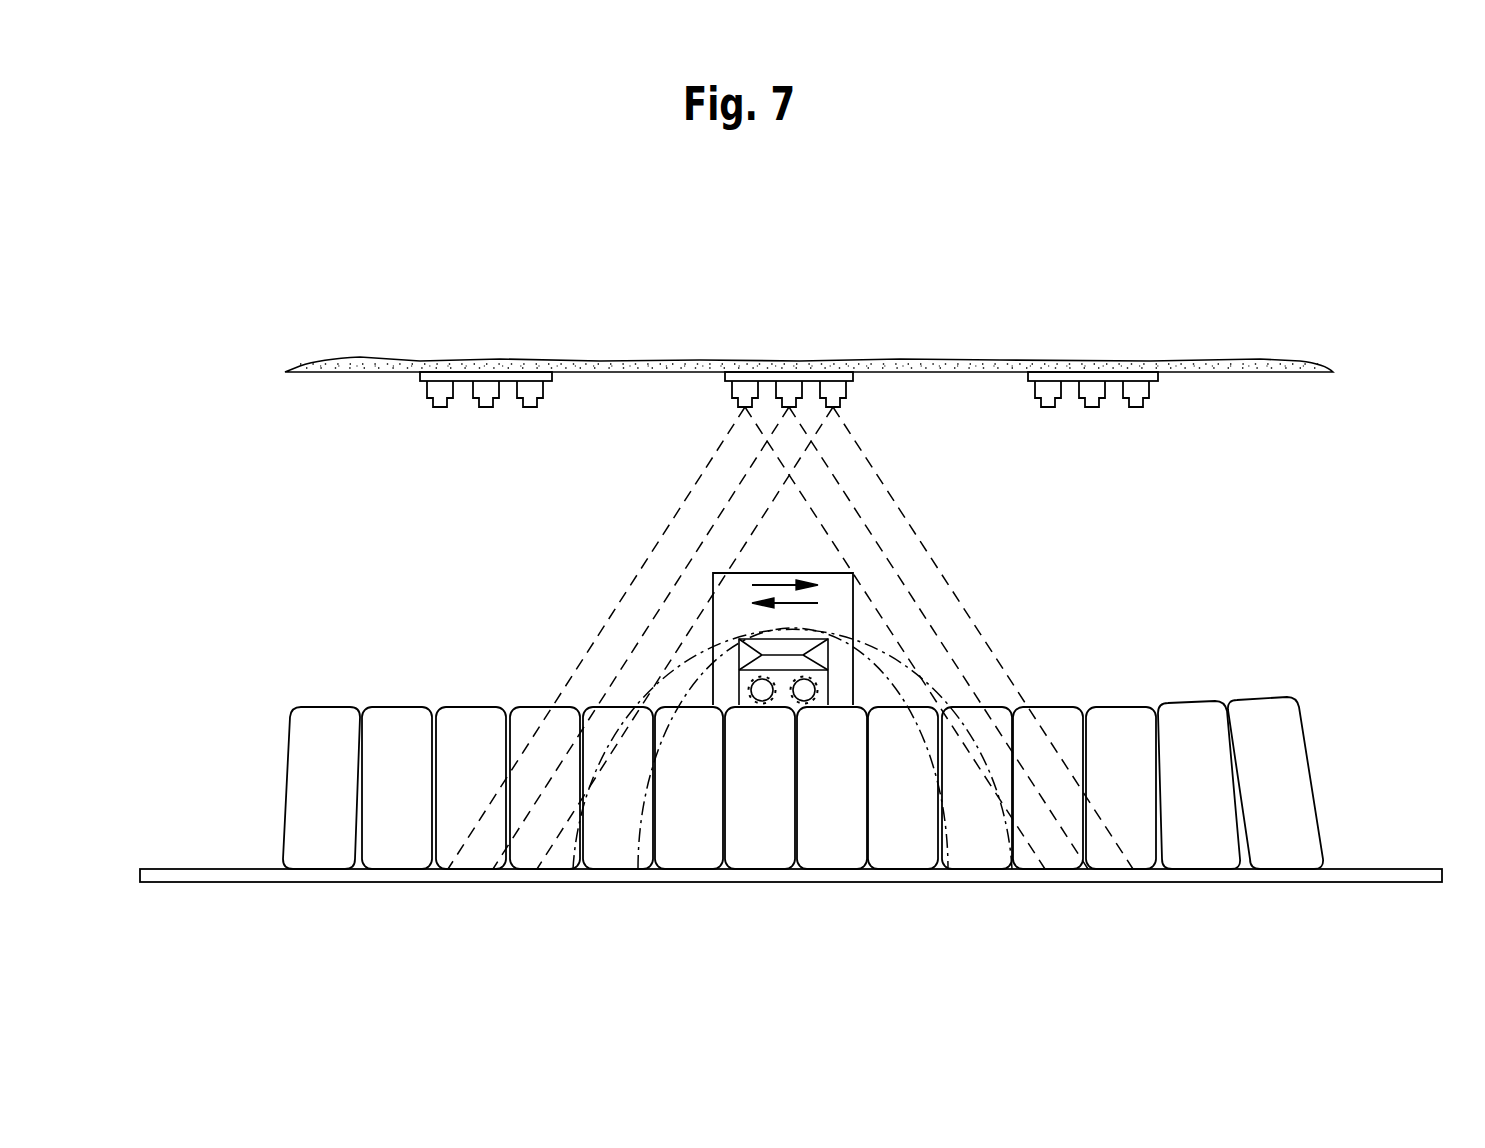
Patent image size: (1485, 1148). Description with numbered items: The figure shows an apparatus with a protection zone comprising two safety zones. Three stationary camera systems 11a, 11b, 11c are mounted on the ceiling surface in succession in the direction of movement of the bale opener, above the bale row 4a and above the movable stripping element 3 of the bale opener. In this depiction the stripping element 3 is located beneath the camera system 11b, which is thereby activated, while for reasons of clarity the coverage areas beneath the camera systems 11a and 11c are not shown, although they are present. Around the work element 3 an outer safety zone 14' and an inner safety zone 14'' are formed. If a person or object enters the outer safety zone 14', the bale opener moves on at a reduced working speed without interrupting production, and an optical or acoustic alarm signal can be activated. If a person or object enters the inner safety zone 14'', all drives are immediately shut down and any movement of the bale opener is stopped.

The camera system 11a is at (552, 343).
The camera system 11b is at (723, 343).
The camera system 11c is at (1158, 343).
The stripping element 3 is at (729, 585).
The inner safety zone 14'' is at (809, 685).
The outer safety zone 14' is at (865, 729).
The bale row 4a is at (300, 722).